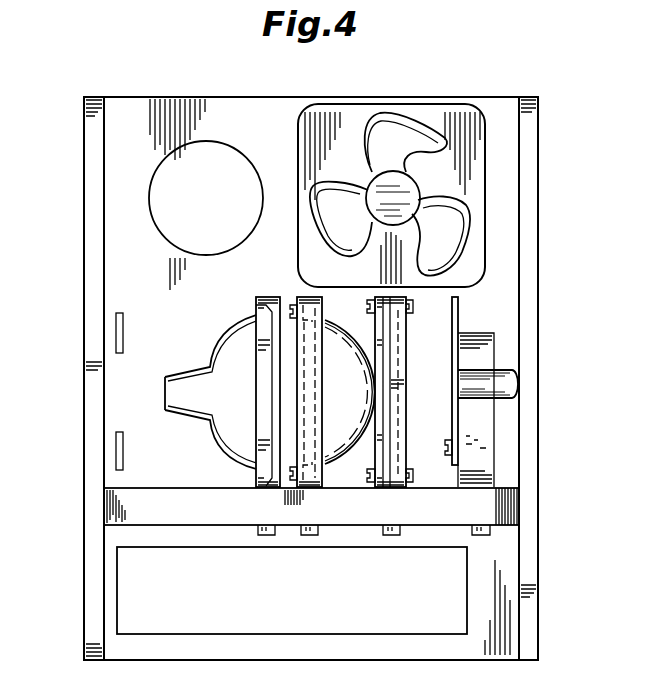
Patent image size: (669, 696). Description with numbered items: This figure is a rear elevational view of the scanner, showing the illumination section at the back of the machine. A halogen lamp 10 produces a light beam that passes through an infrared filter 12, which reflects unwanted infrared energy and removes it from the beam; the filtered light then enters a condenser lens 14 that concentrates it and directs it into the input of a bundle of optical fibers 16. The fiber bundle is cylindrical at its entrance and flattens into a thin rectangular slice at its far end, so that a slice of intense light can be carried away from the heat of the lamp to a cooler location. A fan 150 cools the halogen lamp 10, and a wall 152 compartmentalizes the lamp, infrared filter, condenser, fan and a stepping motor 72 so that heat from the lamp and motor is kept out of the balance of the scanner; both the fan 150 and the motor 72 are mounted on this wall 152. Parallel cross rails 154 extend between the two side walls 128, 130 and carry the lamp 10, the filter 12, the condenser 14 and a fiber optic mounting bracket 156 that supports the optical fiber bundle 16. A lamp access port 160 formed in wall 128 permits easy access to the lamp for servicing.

The halogen lamp 10 is at (228, 434).
The infrared filter 12 is at (322, 476).
The condenser lens 14 is at (418, 444).
The bundle of optical fibers 16 is at (505, 378).
The stepping motor 72 is at (242, 153).
The wall 128 is at (84, 257).
The wall 130 is at (538, 228).
The fan 150 is at (475, 113).
The wall 152 is at (292, 114).
The cross rails 154 is at (508, 505).
The fiber optic mounting bracket 156 is at (487, 449).
The lamp access port 160 is at (84, 417).